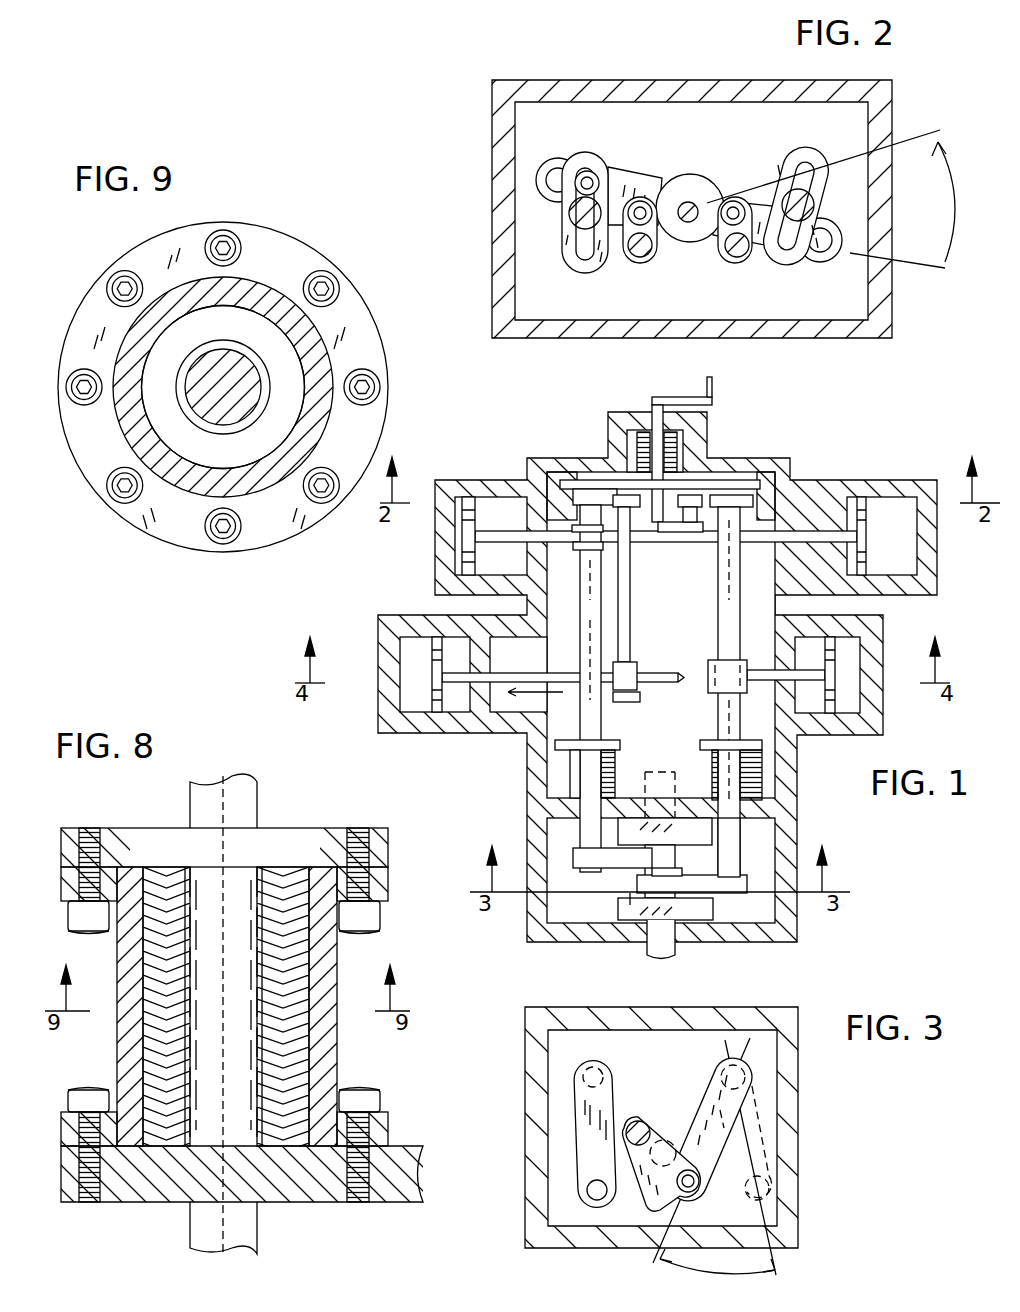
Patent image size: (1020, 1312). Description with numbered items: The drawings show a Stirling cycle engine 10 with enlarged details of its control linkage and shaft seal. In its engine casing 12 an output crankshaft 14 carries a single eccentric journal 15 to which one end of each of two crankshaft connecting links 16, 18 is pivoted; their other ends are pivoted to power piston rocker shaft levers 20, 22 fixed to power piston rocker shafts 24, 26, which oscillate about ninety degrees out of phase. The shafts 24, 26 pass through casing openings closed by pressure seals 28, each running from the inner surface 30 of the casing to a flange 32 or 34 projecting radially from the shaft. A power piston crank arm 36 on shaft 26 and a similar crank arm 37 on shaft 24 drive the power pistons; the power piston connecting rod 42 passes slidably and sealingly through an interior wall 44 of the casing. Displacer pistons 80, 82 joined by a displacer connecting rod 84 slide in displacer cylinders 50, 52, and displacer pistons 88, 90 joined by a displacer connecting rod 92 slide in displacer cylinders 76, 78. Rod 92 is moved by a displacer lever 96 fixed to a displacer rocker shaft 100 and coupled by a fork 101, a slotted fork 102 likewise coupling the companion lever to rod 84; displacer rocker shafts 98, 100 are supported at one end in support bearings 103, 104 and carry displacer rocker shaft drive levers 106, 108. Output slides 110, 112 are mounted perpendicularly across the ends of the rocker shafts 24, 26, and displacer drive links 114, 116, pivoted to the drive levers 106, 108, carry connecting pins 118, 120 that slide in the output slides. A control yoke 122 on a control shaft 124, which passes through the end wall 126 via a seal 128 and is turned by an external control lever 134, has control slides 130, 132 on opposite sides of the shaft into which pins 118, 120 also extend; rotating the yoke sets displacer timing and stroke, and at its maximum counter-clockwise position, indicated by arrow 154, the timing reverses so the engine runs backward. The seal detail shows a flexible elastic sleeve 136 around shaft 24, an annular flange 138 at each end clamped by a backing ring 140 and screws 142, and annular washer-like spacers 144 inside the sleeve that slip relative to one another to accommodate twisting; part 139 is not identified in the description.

In FIG. 1, the Stirling cycle engine 10 is at (370, 620).
In FIG. 8, the engine casing 12 is at (319, 1216).
In FIG. 2, the engine casing 12 is at (492, 210).
In FIG. 1, the engine casing 12 is at (527, 775).
In FIG. 3, the engine casing 12 is at (525, 1048).
In FIG. 1, the output crankshaft 14 is at (676, 946).
In FIG. 3, the output crankshaft 14 is at (675, 1140).
In FIG. 1, the eccentric journal 15 is at (620, 895).
In FIG. 1, the crankshaft connecting link 16 is at (630, 870).
In FIG. 3, the crankshaft connecting link 16 is at (645, 1172).
In FIG. 1, the crankshaft connecting link 18 is at (662, 882).
In FIG. 3, the crankshaft connecting link 18 is at (657, 1130).
In FIG. 1, the power piston rocker shaft lever 20 is at (573, 858).
In FIG. 3, the power piston rocker shaft lever 20 is at (577, 1132).
In FIG. 1, the power piston rocker shaft lever 22 is at (742, 877).
In FIG. 3, the power piston rocker shaft lever 22 is at (762, 1128).
In FIG. 9, the power piston rocker shaft 24 is at (268, 378).
In FIG. 8, the power piston rocker shaft 24 is at (190, 790).
In FIG. 2, the power piston rocker shaft 24 is at (577, 225).
In FIG. 1, the power piston rocker shaft 24 is at (601, 705).
In FIG. 3, the power piston rocker shaft 24 is at (591, 1067).
In FIG. 2, the power piston rocker shaft 26 is at (800, 190).
In FIG. 1, the power piston rocker shaft 26 is at (740, 640).
In FIG. 3, the power piston rocker shaft 26 is at (748, 1076).
In FIG. 1, the pressure seal 28 is at (614, 775).
In FIG. 8, the inner surface 30 is at (422, 1146).
In FIG. 1, the inner surface 30 is at (690, 800).
In FIG. 8, the flange 32 is at (296, 828).
In FIG. 1, the flange 32 is at (570, 742).
In FIG. 1, the flange 34 is at (762, 745).
In FIG. 1, the power piston crank arm 36 is at (718, 660).
In FIG. 1, the power piston crank arm 37 is at (574, 556).
In FIG. 1, the power piston connecting rod 42 is at (758, 672).
In FIG. 1, the interior wall 44 is at (740, 712).
In FIG. 1, the displacer cylinder 50 is at (420, 640).
In FIG. 1, the displacer cylinder 52 is at (860, 690).
In FIG. 1, the displacer cylinder 76 is at (495, 505).
In FIG. 1, the displacer cylinder 78 is at (895, 505).
In FIG. 1, the displacer piston 80 is at (432, 675).
In FIG. 1, the displacer piston 82 is at (835, 650).
In FIG. 1, the displacer connecting rod 84 is at (808, 670).
In FIG. 1, the displacer piston 88 is at (462, 520).
In FIG. 1, the displacer piston 90 is at (866, 536).
In FIG. 1, the displacer connecting rod 92 is at (760, 545).
In FIG. 1, the displacer lever 96 is at (695, 532).
In FIG. 2, the displacer rocker shaft 98 is at (645, 258).
In FIG. 1, the displacer rocker shaft 98 is at (630, 578).
In FIG. 2, the displacer rocker shaft 100 is at (748, 252).
In FIG. 1, the displacer rocker shaft 100 is at (735, 530).
In FIG. 1, the fork 101 is at (660, 552).
In FIG. 1, the slotted fork 102 is at (630, 662).
In FIG. 1, the support bearing 103 is at (641, 697).
In FIG. 1, the support bearing 104 is at (664, 562).
In FIG. 2, the displacer rocker shaft drive lever 106 is at (628, 226).
In FIG. 2, the displacer rocker shaft drive lever 108 is at (737, 258).
In FIG. 2, the output slide 110 is at (572, 262).
In FIG. 1, the output slide 110 is at (562, 495).
In FIG. 2, the output slide 112 is at (762, 205).
In FIG. 1, the output slide 112 is at (760, 500).
In FIG. 2, the displacer drive link 114 is at (650, 195).
In FIG. 1, the displacer drive link 114 is at (595, 489).
In FIG. 2, the displacer drive link 116 is at (736, 202).
In FIG. 1, the displacer drive link 116 is at (742, 492).
In FIG. 2, the connecting pin 118 is at (595, 160).
In FIG. 2, the connecting pin 120 is at (825, 238).
In FIG. 2, the control yoke 122 is at (692, 242).
In FIG. 1, the control yoke 122 is at (722, 478).
In FIG. 2, the control shaft 124 is at (692, 203).
In FIG. 1, the control shaft 124 is at (651, 405).
In FIG. 2, the end wall 126 is at (708, 131).
In FIG. 1, the end wall 126 is at (610, 418).
In FIG. 1, the seal 128 is at (685, 440).
In FIG. 2, the control slide 130 is at (560, 175).
In FIG. 2, the control slide 132 is at (810, 255).
In FIG. 1, the control lever 134 is at (698, 397).
In FIG. 9, the flexible elastic sleeve 136 is at (273, 296).
In FIG. 8, the flexible elastic sleeve 136 is at (117, 1034).
In FIG. 8, the annular flange 138 is at (385, 1132).
In FIG. 8, the upper flange 139 is at (388, 875).
In FIG. 9, the backing ring 140 is at (143, 520).
In FIG. 8, the backing ring 140 is at (70, 905).
In FIG. 9, the screws 142 is at (138, 282).
In FIG. 8, the screws 142 is at (96, 934).
In FIG. 9, the annular washer-like spacers 144 is at (240, 331).
In FIG. 8, the annular washer-like spacers 144 is at (150, 1008).
In FIG. 2, the arrow 154 is at (849, 199).